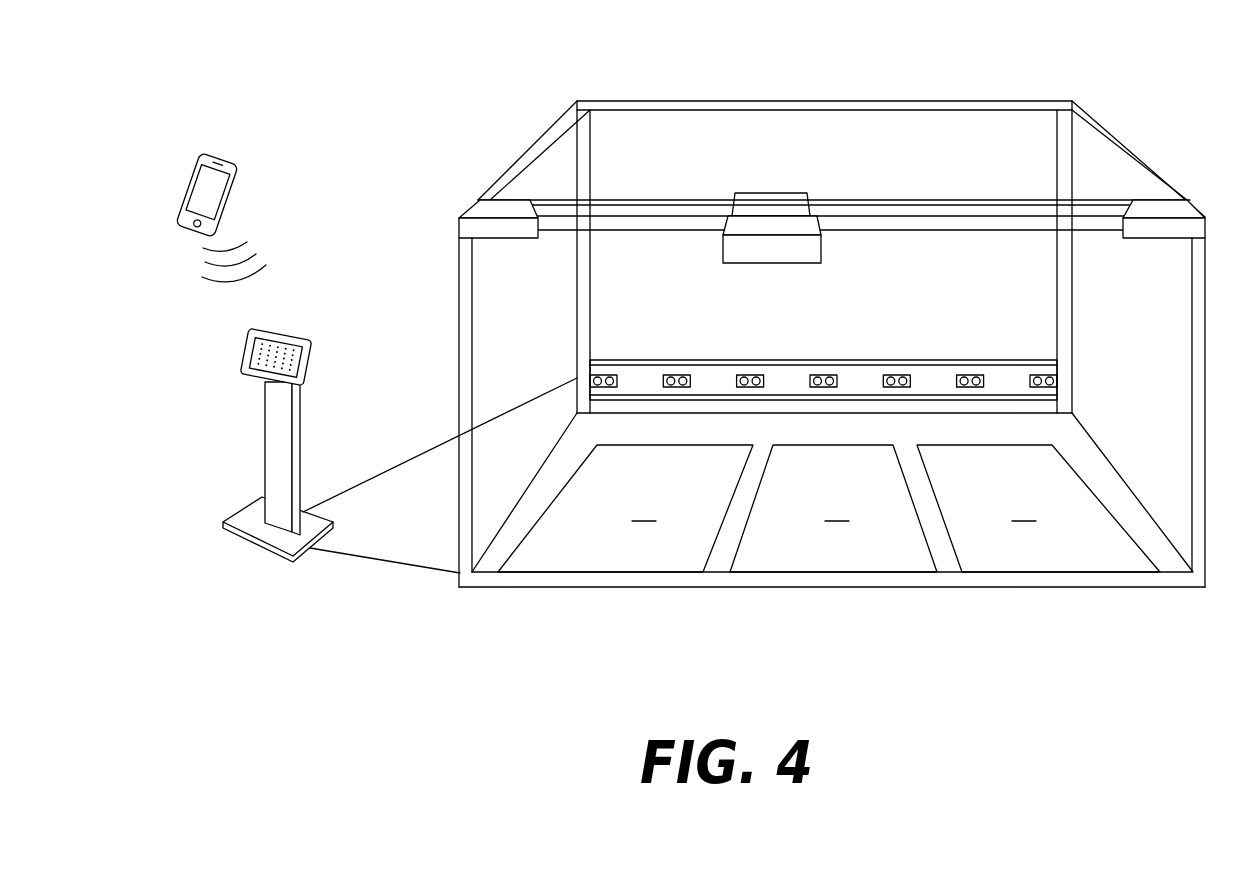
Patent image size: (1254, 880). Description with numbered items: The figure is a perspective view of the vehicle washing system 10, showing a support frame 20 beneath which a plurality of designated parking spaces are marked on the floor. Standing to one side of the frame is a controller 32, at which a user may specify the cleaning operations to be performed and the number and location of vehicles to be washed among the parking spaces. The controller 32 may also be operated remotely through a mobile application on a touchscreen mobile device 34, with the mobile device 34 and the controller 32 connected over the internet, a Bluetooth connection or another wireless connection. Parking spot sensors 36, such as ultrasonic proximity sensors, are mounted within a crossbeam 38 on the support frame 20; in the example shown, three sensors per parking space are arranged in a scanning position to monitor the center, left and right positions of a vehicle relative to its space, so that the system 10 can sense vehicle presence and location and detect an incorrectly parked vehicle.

The vehicle washing system 10 is at (1124, 61).
The support frame 20 is at (515, 158).
The controller 32 is at (238, 363).
The touchscreen mobile device 34 is at (192, 190).
The parking spot sensors 36 is at (680, 372).
The crossbeam 38 is at (868, 372).